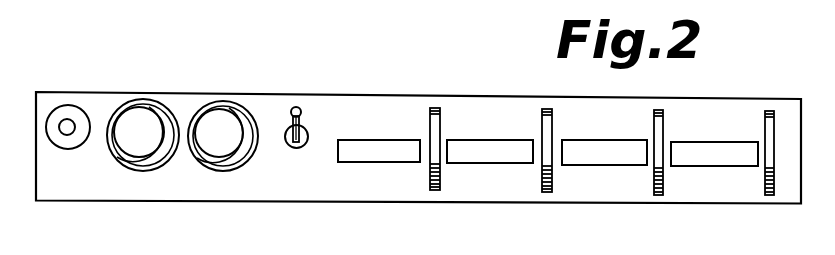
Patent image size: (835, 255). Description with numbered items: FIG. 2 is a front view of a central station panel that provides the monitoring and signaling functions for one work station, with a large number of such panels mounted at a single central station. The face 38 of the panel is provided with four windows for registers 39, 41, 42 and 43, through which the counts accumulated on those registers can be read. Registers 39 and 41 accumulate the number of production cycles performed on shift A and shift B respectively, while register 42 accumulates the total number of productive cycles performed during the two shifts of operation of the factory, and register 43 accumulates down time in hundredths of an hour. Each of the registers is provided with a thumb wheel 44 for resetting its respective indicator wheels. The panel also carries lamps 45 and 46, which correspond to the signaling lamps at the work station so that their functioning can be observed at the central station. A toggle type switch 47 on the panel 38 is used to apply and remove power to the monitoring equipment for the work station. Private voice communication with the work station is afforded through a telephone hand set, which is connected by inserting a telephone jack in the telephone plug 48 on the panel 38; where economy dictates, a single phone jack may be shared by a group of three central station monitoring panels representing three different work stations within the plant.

The face of the panel 38 is at (297, 197).
The register 39 is at (368, 155).
The register 41 is at (488, 153).
The register 42 is at (602, 155).
The register 43 is at (710, 158).
The thumb wheel 44 is at (435, 108).
The lamp 45 is at (237, 123).
The lamp 46 is at (152, 122).
The toggle type switch 47 is at (300, 124).
The telephone plug 48 is at (73, 122).